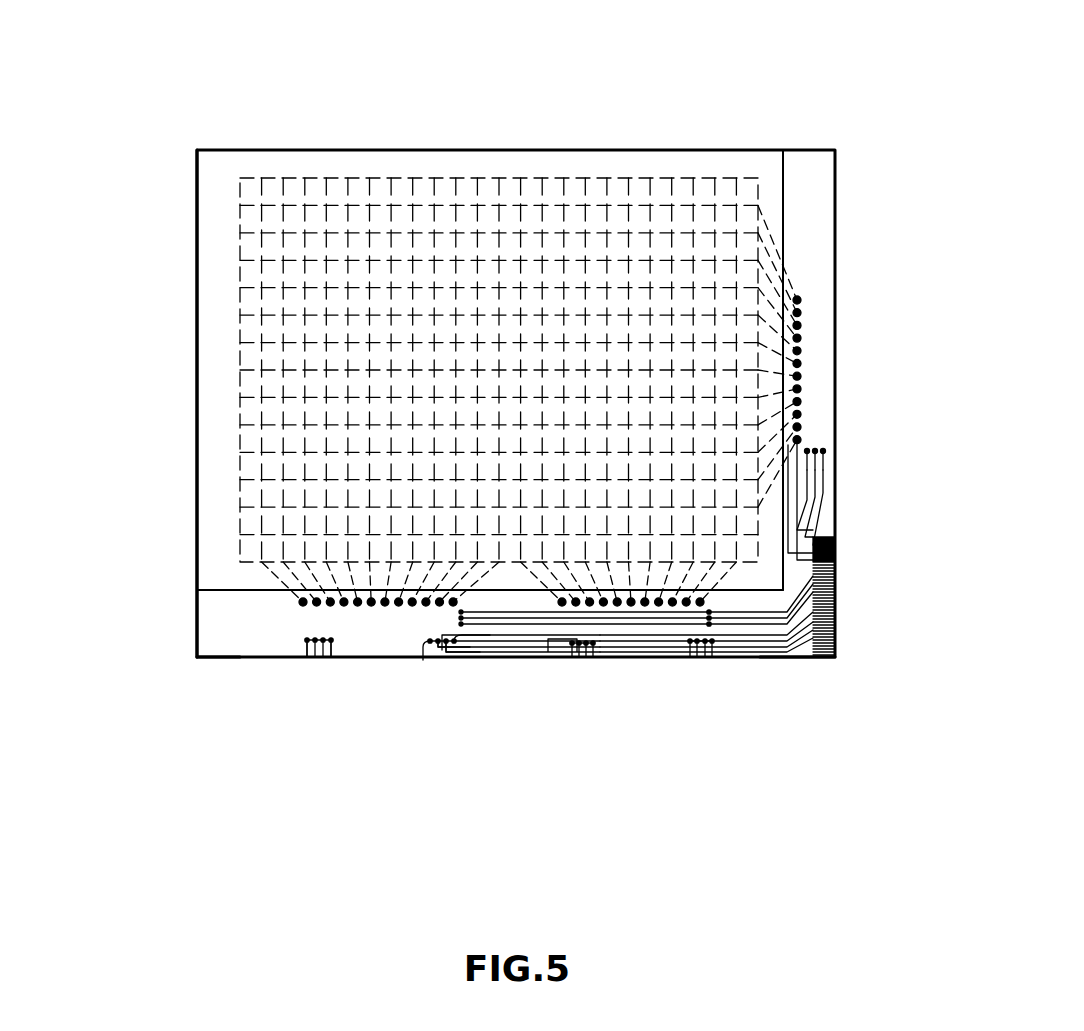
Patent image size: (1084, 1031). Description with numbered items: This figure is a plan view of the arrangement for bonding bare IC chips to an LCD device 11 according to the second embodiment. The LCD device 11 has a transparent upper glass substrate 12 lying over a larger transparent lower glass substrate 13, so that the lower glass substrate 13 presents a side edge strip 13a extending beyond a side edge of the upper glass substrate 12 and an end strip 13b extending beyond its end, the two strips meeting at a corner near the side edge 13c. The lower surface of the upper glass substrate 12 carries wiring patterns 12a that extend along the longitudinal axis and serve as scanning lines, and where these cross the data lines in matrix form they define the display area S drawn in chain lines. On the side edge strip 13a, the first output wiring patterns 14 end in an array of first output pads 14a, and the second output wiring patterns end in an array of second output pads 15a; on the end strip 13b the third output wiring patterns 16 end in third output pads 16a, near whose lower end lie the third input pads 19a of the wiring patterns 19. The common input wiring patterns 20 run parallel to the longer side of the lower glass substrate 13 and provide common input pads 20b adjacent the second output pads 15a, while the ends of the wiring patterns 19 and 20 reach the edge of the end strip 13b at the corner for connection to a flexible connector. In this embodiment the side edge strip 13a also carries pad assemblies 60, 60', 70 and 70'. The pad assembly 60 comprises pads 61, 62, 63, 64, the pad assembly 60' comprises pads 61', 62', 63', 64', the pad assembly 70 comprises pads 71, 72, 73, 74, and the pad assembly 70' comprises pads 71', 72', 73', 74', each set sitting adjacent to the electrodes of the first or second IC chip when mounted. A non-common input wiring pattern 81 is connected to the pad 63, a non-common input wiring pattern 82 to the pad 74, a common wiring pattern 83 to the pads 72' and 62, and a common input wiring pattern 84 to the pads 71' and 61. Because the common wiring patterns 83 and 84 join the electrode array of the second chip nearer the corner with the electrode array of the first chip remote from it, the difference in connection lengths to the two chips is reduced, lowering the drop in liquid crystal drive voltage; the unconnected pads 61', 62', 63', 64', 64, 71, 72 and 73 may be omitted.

The display area S is at (486, 185).
The LCD device 11 is at (185, 215).
The upper glass substrate 12 is at (205, 362).
The wiring patterns 12a is at (617, 205).
The lower glass substrate 13 is at (810, 667).
The side edge strip 13a is at (207, 617).
The end strip 13b is at (824, 170).
The side edge 13c is at (222, 657).
The first transparent output wiring patterns 14 is at (288, 600).
The first output pads 14a is at (290, 612).
The second output pads 15a is at (553, 612).
The third transparent output wiring patterns 16 is at (800, 276).
The third output pads 16a is at (808, 323).
The wiring patterns 19 is at (843, 468).
The third input pads 19a is at (820, 434).
The common input wiring patterns 20 is at (841, 602).
The common input pads 20b is at (722, 632).
The pad assembly 60 is at (506, 750).
The pad assembly 60' is at (343, 716).
The pad 61 is at (436, 714).
The pad 62 is at (460, 729).
The pad 63 is at (477, 714).
The pad 64 is at (495, 727).
The pad 61' is at (300, 679).
The pad 62' is at (328, 693).
The pad 63' is at (349, 679).
The pad 64' is at (366, 693).
The pad assembly 70 is at (723, 757).
The pad assembly 70' is at (590, 719).
The pad 71 is at (680, 718).
The pad 72 is at (706, 733).
The pad 73 is at (728, 718).
The pad 74 is at (744, 733).
The pad 71' is at (547, 681).
The pad 72' is at (570, 695).
The pad 73' is at (600, 681).
The pad 74' is at (620, 695).
The non-common input wiring pattern 81 is at (838, 603).
The non-common input wiring pattern 82 is at (838, 620).
The common wiring pattern 83 is at (836, 630).
The common input wiring pattern 84 is at (832, 642).